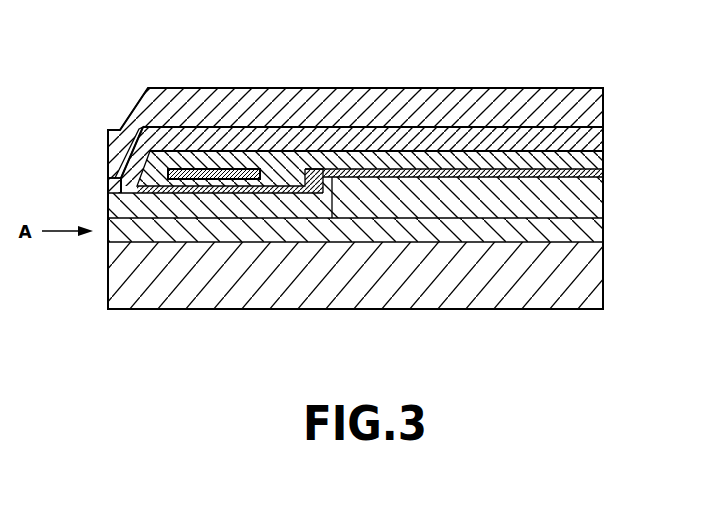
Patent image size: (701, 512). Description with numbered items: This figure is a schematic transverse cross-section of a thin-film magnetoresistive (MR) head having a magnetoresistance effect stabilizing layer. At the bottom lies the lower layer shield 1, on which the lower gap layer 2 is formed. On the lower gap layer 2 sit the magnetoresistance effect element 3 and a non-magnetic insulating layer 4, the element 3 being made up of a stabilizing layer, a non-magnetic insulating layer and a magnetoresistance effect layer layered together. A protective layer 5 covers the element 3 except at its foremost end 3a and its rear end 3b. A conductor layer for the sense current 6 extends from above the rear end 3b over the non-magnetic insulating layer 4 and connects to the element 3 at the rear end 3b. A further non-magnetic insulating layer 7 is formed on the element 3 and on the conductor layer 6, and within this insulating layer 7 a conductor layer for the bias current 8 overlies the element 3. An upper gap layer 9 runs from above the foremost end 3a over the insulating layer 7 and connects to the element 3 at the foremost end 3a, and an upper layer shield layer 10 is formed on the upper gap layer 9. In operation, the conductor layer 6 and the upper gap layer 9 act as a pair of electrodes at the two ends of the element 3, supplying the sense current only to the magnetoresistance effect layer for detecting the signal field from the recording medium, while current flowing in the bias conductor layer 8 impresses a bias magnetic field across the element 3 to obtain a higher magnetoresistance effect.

The lower layer shield 1 is at (516, 290).
The lower gap layer 2 is at (560, 232).
The magnetoresistance effect element 3 is at (210, 205).
The foremost end 3a is at (115, 183).
The rear end 3b is at (320, 177).
The non-magnetic insulating layer 4 is at (447, 195).
The protective layer 5 is at (155, 177).
The conductor layer for the sense current 6 is at (420, 168).
The non-magnetic insulating layer 7 is at (285, 176).
The conductor layer for the bias current 8 is at (228, 168).
The upper gap layer 9 is at (177, 130).
The upper layer shield layer 10 is at (527, 100).